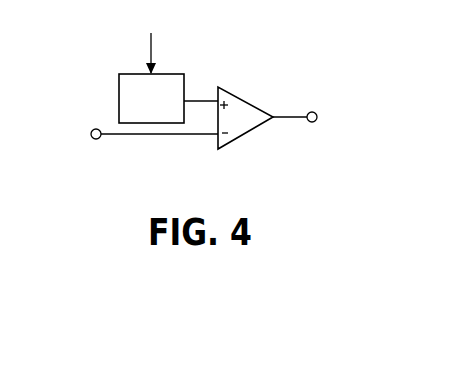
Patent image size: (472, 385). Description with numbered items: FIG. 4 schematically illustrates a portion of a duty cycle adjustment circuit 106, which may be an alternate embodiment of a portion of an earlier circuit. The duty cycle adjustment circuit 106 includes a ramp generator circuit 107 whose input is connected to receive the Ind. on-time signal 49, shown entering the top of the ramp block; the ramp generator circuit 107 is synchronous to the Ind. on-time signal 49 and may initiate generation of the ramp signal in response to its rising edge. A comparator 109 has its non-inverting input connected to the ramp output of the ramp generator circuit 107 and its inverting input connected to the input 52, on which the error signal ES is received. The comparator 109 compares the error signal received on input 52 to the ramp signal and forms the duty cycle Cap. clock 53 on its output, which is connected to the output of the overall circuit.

The Ind. on-time signal 49 is at (155, 53).
The input 52 is at (92, 141).
The duty cycle Cap. clock 53 is at (318, 113).
The duty cycle adjustment circuit 106 is at (350, 172).
The ramp generator circuit 107 is at (186, 78).
The comparator 109 is at (245, 97).